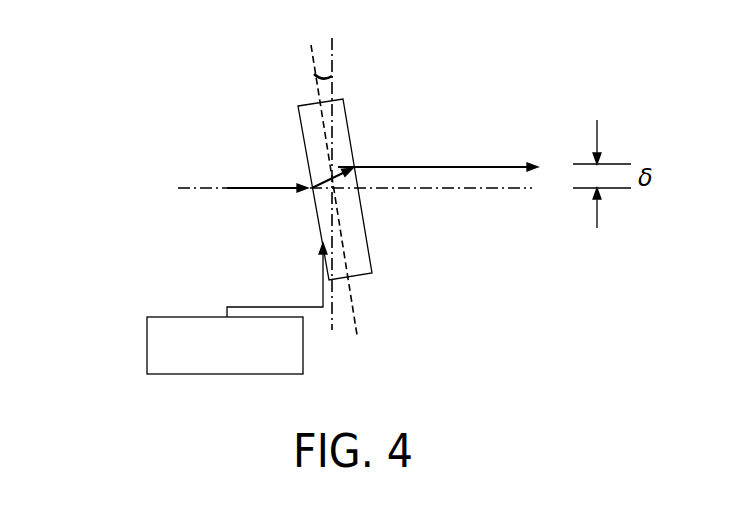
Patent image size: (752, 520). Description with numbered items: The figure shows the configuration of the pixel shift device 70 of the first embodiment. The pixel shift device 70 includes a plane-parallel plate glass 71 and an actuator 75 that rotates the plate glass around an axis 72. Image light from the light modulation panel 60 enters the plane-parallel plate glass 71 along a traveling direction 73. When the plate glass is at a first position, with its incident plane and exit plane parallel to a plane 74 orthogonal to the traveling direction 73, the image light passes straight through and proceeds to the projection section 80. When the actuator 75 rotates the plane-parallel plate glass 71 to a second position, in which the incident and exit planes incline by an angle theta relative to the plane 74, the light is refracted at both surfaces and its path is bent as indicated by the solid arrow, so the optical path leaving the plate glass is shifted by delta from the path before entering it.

The light modulation panel 60 is at (251, 174).
The pixel shift device 70 is at (363, 203).
The plane-parallel plate glass 71 is at (373, 271).
The axis 72 is at (333, 190).
The traveling direction 73 is at (428, 190).
The plane 74 is at (332, 57).
The actuator 75 is at (166, 317).
The projection section 80 is at (416, 157).